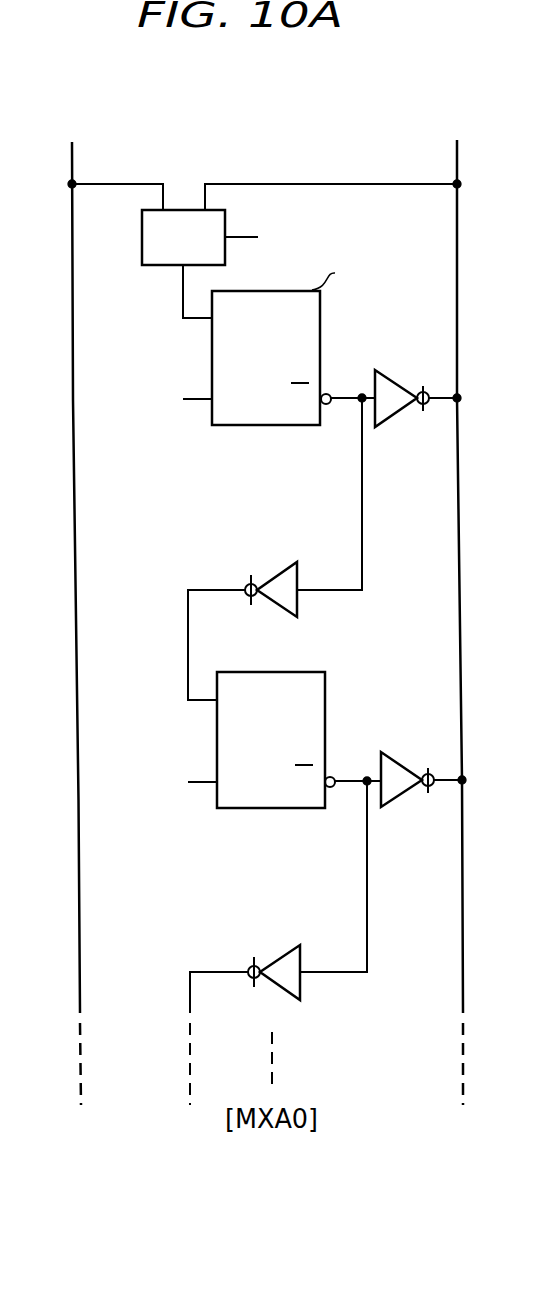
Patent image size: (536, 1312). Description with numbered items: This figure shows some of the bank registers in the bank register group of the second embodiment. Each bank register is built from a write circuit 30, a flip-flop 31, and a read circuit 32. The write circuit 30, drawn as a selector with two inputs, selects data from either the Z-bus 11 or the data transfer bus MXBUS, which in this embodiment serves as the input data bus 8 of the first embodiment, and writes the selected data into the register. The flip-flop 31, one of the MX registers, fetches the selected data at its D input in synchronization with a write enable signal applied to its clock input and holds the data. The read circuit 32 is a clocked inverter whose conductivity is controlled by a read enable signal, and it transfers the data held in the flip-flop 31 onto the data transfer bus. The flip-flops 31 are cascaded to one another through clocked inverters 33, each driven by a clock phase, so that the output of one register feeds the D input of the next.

The Z-bus 11 is at (73, 158).
The input data bus 8 is at (457, 162).
The write circuit 30 is at (155, 267).
The flip-flop 31 is at (222, 427).
The read circuit 32 is at (387, 417).
The clocked inverter 33 is at (300, 570).